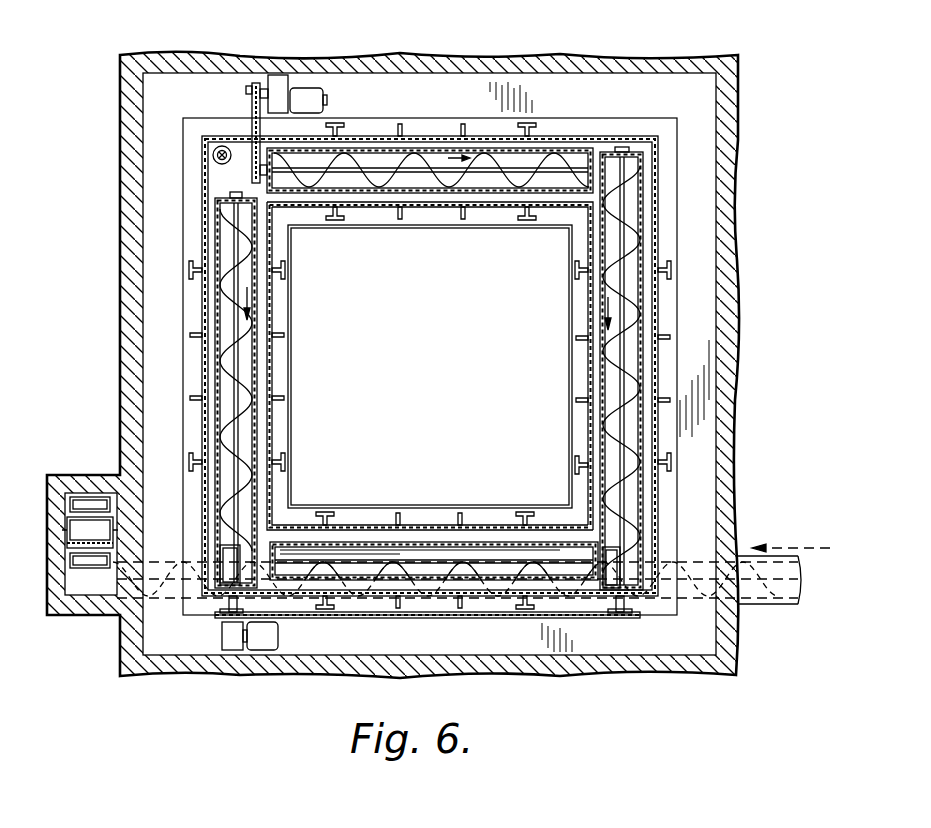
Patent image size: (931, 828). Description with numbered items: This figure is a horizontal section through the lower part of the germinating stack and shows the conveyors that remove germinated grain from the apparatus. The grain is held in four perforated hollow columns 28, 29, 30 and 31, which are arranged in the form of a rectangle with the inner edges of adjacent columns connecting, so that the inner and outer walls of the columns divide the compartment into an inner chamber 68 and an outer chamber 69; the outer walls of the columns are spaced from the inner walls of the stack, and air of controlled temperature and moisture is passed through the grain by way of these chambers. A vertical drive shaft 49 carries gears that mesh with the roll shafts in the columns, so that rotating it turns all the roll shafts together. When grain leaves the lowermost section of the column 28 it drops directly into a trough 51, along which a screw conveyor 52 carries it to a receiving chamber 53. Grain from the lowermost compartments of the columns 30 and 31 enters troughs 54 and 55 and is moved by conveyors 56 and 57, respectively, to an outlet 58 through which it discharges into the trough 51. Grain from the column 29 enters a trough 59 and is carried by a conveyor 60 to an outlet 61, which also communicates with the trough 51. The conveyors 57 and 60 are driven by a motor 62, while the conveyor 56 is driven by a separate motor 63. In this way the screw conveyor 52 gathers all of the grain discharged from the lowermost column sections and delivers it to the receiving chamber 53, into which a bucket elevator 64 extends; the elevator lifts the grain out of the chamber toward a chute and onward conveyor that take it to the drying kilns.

The hollow column 28 is at (442, 538).
The hollow column 29 is at (263, 352).
The hollow column 30 is at (432, 198).
The hollow column 31 is at (597, 378).
The vertical drive shaft 49 is at (222, 146).
The trough 51 is at (363, 567).
The screw conveyor 52 is at (532, 567).
The receiving chamber 53 is at (82, 585).
The trough 54 is at (542, 152).
The trough 55 is at (638, 290).
The conveyor 56 is at (566, 170).
The conveyor 57 is at (632, 320).
The outlet 58 is at (613, 575).
The trough 59 is at (257, 290).
The conveyor 60 is at (228, 373).
The outlet 61 is at (222, 550).
The motor 62 is at (262, 643).
The motor 63 is at (307, 97).
The bucket elevator 64 is at (88, 502).
The inner chamber 68 is at (480, 325).
The outer chamber 69 is at (445, 83).